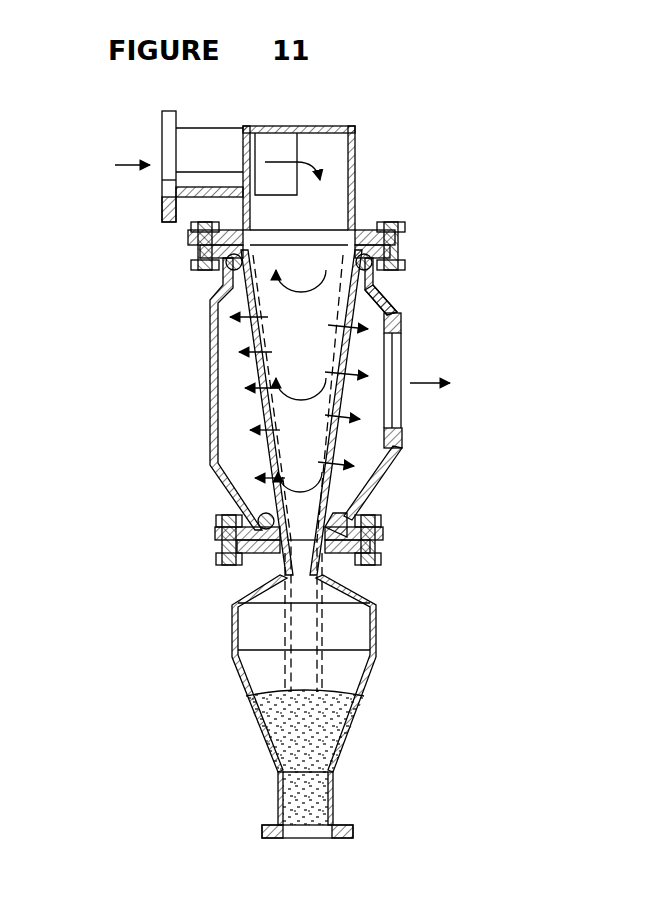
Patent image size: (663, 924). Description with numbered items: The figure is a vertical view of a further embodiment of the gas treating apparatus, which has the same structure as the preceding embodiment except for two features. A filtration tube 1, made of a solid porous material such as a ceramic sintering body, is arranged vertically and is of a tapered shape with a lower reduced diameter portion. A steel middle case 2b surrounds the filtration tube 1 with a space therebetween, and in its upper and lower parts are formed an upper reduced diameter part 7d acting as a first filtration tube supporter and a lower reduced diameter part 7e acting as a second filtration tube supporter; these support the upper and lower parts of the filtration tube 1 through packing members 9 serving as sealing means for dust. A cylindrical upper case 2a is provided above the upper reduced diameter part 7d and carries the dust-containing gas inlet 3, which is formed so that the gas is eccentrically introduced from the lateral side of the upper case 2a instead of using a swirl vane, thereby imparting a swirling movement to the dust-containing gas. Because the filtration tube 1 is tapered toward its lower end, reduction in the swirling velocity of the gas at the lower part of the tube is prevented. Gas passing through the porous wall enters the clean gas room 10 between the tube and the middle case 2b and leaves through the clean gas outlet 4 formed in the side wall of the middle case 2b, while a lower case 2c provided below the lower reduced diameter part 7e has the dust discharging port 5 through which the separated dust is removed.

The filtration tube 1 is at (345, 347).
The upper case 2a is at (357, 177).
The middle case 2b is at (390, 312).
The lower case 2c is at (376, 615).
The dust-containing gas inlet 3 is at (162, 197).
The clean gas outlet 4 is at (402, 412).
The dust discharging port 5 is at (333, 795).
The upper reduced diameter part 7d is at (378, 290).
The lower reduced diameter part 7e is at (355, 512).
The packing member 9 is at (378, 265).
The clean gas room 10 is at (368, 465).